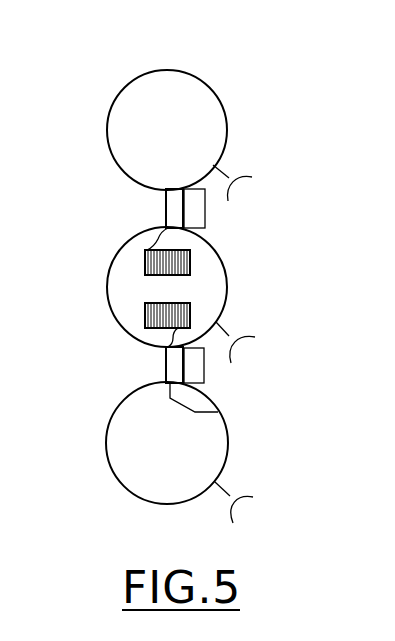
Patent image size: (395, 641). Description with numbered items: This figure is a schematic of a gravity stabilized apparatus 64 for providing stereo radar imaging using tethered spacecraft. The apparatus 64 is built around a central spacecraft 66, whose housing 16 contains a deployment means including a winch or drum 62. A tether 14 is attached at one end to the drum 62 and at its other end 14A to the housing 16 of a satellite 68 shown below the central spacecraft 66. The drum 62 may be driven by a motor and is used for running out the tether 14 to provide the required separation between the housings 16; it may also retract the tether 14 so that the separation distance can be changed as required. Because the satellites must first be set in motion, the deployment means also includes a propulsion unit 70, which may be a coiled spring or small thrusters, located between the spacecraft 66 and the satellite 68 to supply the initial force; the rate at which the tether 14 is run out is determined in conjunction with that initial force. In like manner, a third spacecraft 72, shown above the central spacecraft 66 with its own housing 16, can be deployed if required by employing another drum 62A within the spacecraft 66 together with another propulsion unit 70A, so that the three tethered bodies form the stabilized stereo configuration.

The tether 14 is at (166, 207).
The other end of tether 14A is at (218, 412).
The housing 16 is at (108, 118).
The drum 62 is at (190, 309).
The another drum 62A is at (190, 262).
The gravity stabilized apparatus 64 is at (206, 62).
The spacecraft 66 is at (100, 281).
The satellite 68 is at (112, 409).
The propulsion unit 70 is at (204, 375).
The another propulsion unit 70A is at (205, 222).
The third spacecraft 72 is at (236, 117).